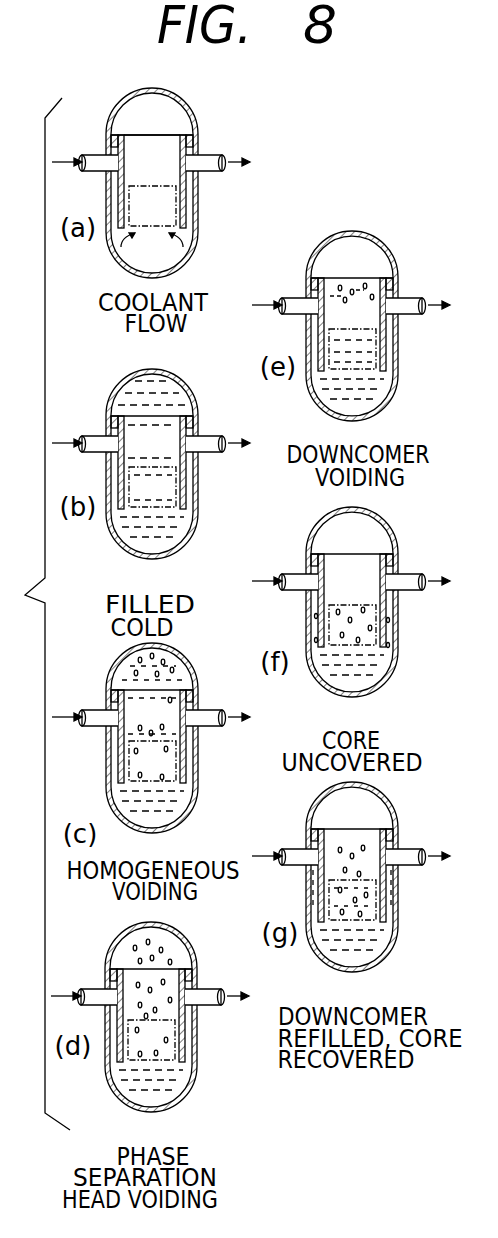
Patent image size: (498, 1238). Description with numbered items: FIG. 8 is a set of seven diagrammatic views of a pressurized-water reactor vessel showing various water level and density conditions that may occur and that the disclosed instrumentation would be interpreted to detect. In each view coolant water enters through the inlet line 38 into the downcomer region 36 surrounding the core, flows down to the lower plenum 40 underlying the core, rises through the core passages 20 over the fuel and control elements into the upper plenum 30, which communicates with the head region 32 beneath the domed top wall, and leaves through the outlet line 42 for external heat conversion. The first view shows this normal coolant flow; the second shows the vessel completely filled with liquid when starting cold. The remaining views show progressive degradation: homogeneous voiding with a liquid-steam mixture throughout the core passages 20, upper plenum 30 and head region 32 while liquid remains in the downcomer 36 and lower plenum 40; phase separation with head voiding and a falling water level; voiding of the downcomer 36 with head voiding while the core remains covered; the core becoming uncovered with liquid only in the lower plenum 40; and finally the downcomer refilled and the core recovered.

The core passages 20 is at (141, 215).
The upper plenum region 30 is at (143, 167).
The head region 32 is at (143, 130).
The downcomer plenum region 36 is at (118, 203).
The coolant inlet line 38 is at (99, 155).
The lower plenum region 40 is at (140, 253).
The coolant outlet line 42 is at (213, 155).